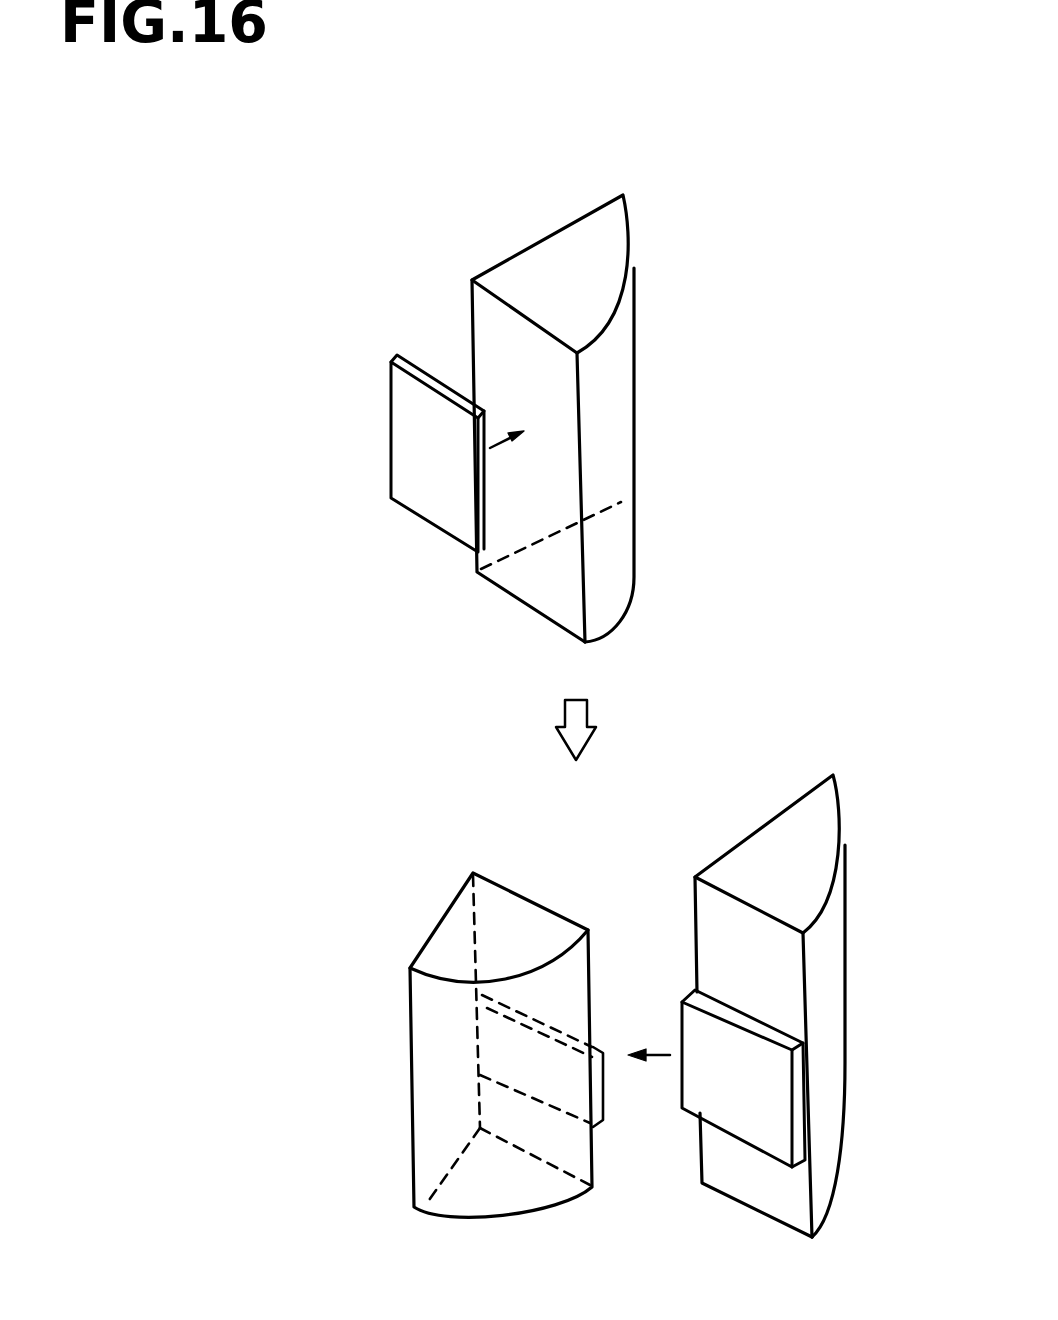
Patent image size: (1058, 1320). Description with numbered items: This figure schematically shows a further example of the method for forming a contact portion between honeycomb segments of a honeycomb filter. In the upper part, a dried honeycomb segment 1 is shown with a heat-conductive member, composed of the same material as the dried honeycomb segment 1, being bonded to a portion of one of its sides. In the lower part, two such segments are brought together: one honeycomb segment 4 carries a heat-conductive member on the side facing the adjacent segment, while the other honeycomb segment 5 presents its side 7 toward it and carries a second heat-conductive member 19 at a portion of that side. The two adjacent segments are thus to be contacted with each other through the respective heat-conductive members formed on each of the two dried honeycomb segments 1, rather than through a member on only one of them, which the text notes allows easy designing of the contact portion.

The dried honeycomb segment 1 is at (478, 337).
The honeycomb segment 5 is at (454, 996).
The side 7 is at (505, 903).
The heat-conductive member 19 is at (607, 1097).
The honeycomb segment 4 is at (827, 928).